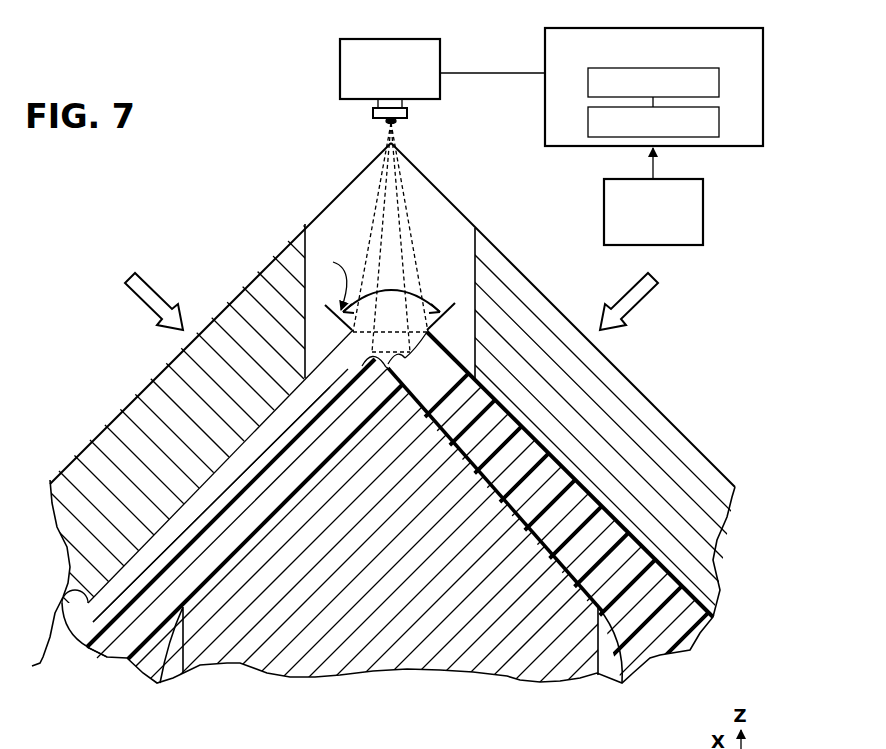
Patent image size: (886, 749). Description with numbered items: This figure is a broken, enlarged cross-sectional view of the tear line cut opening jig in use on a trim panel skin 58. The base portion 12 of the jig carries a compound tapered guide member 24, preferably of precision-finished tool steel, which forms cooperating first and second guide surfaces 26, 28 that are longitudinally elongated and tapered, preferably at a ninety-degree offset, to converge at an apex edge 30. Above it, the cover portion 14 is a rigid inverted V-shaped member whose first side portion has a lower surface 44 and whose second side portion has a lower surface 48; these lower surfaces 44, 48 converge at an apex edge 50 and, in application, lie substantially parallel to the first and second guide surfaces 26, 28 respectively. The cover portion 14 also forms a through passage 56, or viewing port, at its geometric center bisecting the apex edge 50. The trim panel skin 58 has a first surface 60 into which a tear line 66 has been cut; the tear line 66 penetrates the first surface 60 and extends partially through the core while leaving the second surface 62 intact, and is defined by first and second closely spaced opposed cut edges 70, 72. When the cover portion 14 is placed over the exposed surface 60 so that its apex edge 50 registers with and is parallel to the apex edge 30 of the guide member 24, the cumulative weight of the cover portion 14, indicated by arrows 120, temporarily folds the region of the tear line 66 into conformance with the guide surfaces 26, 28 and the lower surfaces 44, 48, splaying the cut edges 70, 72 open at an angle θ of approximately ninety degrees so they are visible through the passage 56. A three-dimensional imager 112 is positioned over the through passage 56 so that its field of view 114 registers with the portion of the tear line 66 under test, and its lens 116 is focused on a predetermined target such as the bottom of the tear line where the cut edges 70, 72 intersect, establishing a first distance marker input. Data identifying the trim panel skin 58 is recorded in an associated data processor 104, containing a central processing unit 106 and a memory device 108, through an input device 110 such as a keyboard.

The base portion 12 is at (279, 679).
The cover portion 14 is at (229, 294).
The guide member 24 is at (401, 662).
The first guide surface 26 is at (218, 563).
The second guide surface 28 is at (508, 512).
The apex edge 30 is at (393, 390).
The lower surface 44 is at (207, 483).
The lower surface 48 is at (542, 447).
The apex edge 50 is at (397, 290).
The through passage 56 is at (475, 253).
The trim panel skin 58 is at (660, 661).
The first surface 60 is at (86, 650).
The second surface 62 is at (207, 666).
The tear line 66 is at (414, 355).
The first cut edge 70 is at (348, 372).
The second cut edge 72 is at (397, 364).
The data processor 104 is at (763, 42).
The central processing unit 106 is at (720, 80).
The memory device 108 is at (719, 118).
The input device 110 is at (703, 209).
The 3D imager 112 is at (340, 70).
The field of view 114 is at (362, 300).
The lens 116 is at (373, 113).
The arrows 120 is at (137, 307).